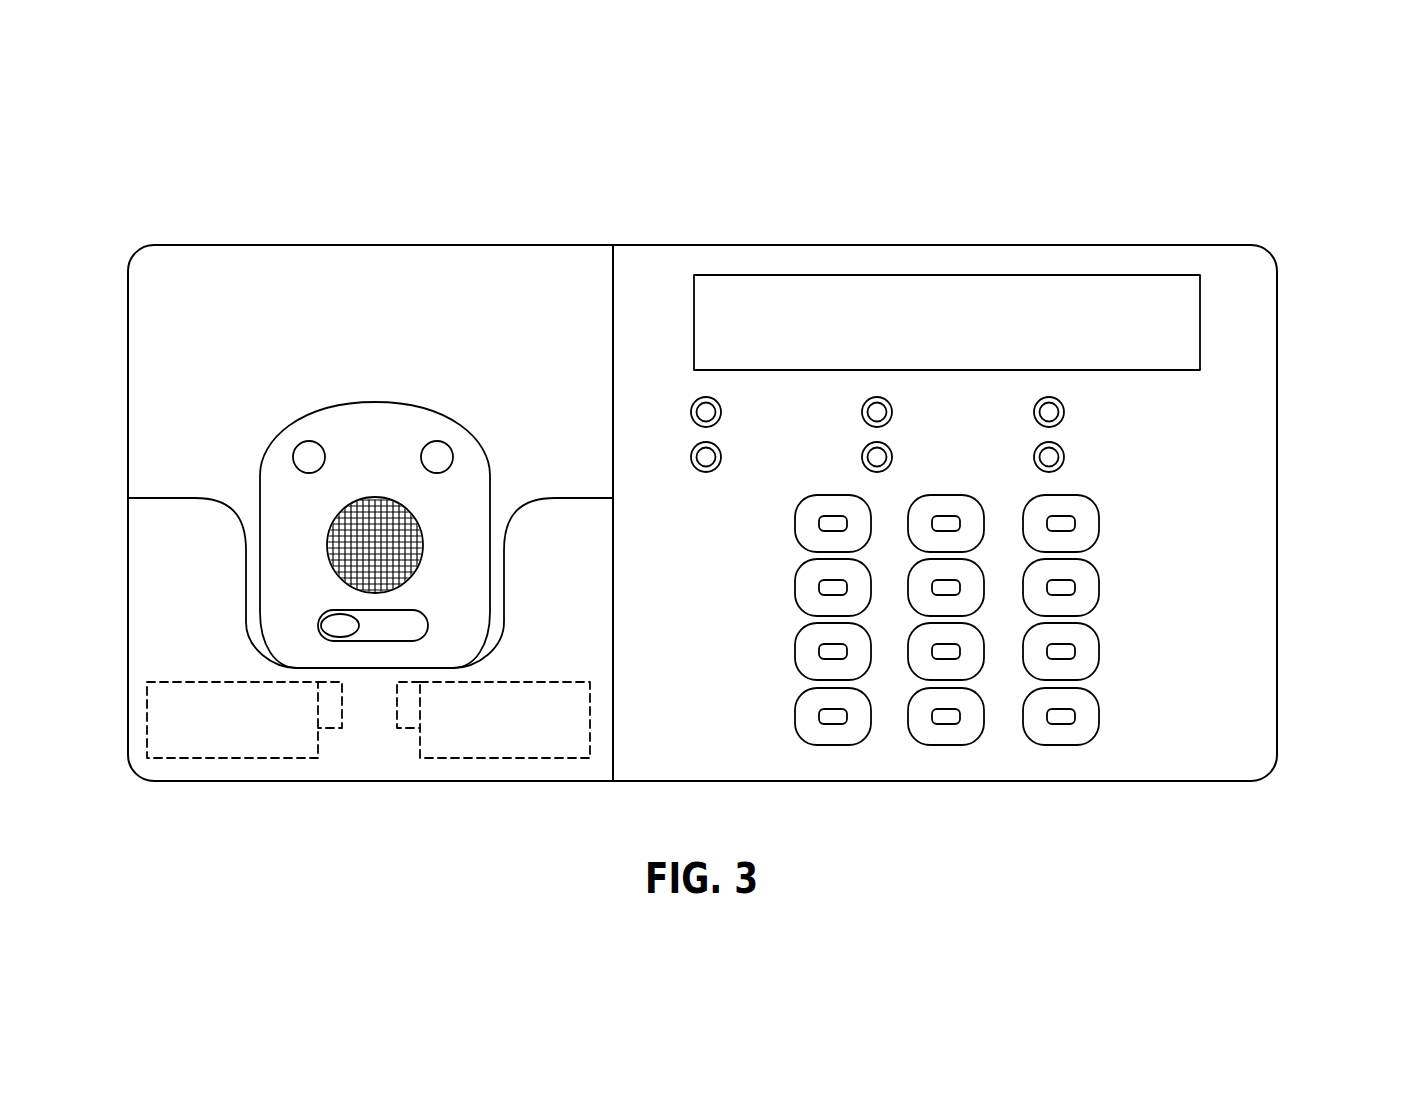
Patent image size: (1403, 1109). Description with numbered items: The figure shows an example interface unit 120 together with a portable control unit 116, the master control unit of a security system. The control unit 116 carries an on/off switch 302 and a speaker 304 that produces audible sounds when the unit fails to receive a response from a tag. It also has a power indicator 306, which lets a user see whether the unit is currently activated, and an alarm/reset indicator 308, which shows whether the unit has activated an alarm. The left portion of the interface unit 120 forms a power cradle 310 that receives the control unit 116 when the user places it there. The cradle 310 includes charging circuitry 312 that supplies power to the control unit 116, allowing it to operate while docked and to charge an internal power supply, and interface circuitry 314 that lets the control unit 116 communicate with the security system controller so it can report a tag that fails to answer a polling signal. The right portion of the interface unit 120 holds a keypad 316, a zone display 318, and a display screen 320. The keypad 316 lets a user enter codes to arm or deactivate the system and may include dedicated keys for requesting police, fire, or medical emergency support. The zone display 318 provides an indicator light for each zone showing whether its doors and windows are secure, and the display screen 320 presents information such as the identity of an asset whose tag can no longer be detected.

The interface unit 120 is at (660, 188).
The control unit 116 is at (375, 400).
The on/off switch 302 is at (317, 626).
The speaker 304 is at (423, 541).
The power indicator 306 is at (303, 442).
The alarm/reset indicator 308 is at (437, 441).
The power cradle 310 is at (128, 618).
The charging circuitry 312 is at (507, 759).
The interface circuitry 314 is at (235, 759).
The keypad 316 is at (1289, 491).
The zone display 318 is at (1289, 391).
The display screen 320 is at (1289, 277).